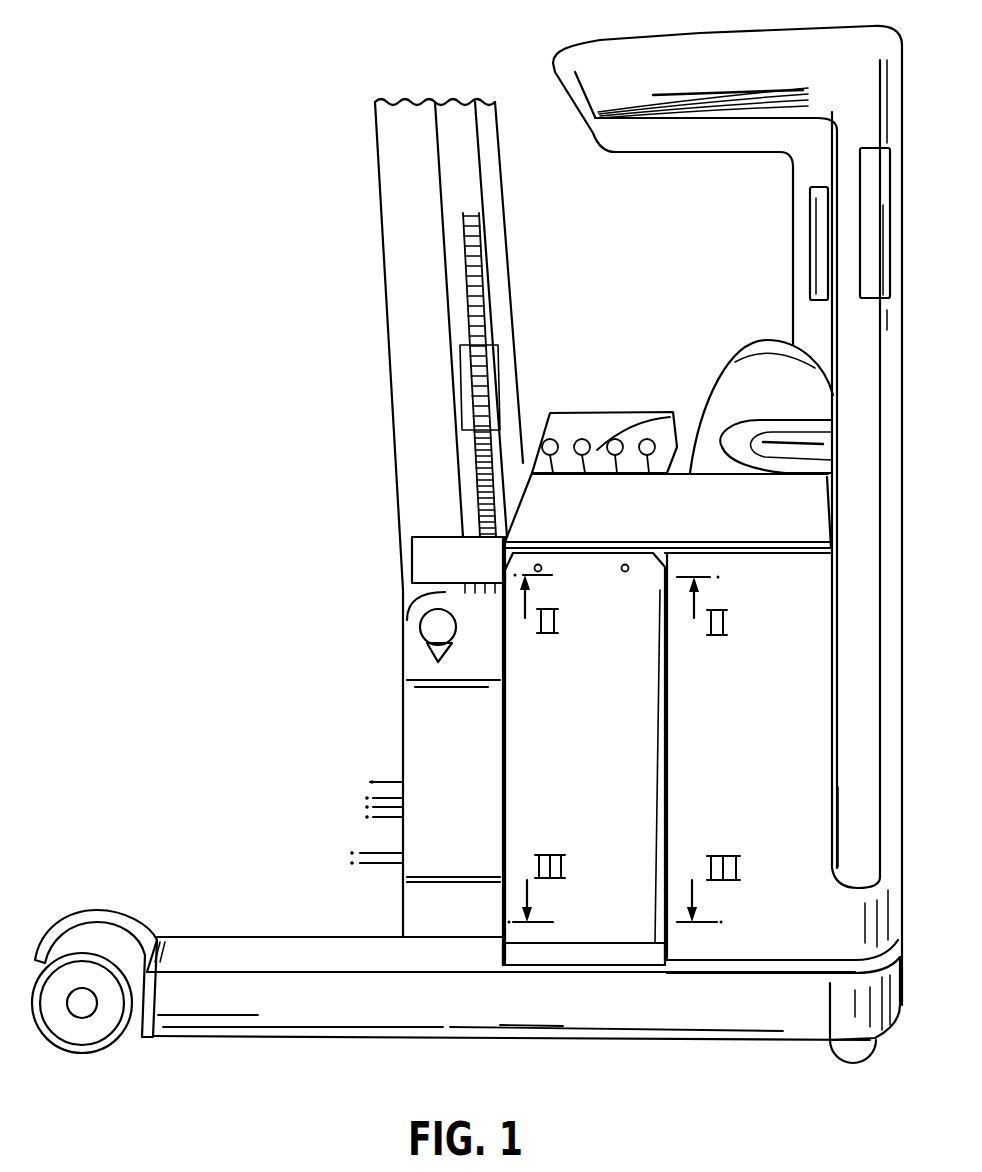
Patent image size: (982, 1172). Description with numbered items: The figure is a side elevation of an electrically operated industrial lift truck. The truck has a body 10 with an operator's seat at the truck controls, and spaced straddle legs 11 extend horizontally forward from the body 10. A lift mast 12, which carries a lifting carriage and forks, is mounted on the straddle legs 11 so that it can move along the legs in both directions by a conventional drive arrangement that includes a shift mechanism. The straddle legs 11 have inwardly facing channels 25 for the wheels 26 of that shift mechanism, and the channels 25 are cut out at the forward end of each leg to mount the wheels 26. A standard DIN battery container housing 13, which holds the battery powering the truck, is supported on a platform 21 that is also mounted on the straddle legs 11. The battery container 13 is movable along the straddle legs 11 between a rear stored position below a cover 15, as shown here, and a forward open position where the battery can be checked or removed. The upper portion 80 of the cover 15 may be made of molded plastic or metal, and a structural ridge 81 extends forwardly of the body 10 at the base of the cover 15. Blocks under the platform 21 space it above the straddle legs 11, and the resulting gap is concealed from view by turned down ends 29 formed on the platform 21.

The body 10 is at (797, 835).
The straddle legs 11 is at (383, 783).
The lift mast 12 is at (376, 389).
The battery container housing 13 is at (587, 735).
The cover 15 is at (525, 518).
The platform 21 is at (595, 931).
The channels 25 is at (380, 838).
The wheels 26 is at (105, 1020).
The turned down ends 29 is at (585, 957).
The upper portion of cover 80 is at (543, 490).
The structural ridge 81 is at (772, 550).